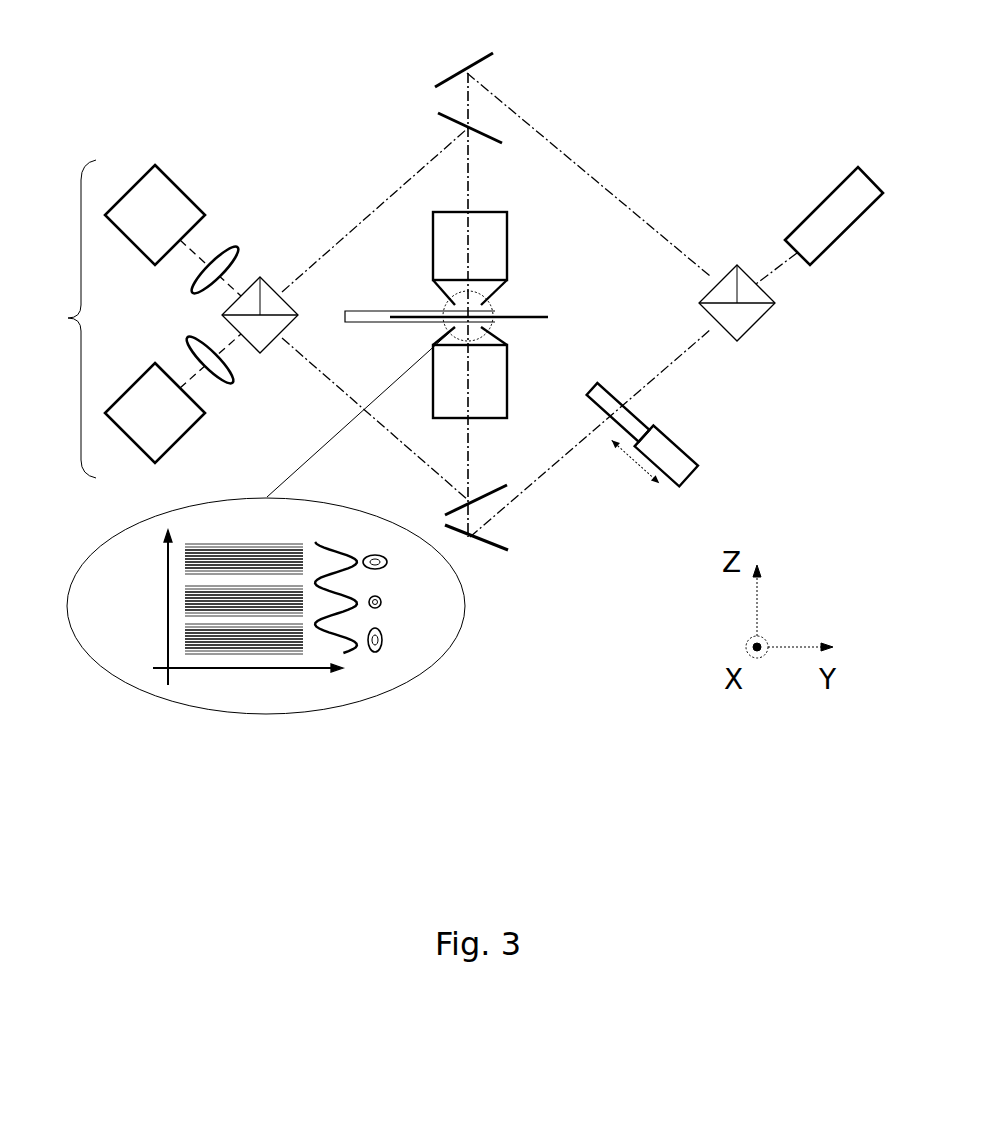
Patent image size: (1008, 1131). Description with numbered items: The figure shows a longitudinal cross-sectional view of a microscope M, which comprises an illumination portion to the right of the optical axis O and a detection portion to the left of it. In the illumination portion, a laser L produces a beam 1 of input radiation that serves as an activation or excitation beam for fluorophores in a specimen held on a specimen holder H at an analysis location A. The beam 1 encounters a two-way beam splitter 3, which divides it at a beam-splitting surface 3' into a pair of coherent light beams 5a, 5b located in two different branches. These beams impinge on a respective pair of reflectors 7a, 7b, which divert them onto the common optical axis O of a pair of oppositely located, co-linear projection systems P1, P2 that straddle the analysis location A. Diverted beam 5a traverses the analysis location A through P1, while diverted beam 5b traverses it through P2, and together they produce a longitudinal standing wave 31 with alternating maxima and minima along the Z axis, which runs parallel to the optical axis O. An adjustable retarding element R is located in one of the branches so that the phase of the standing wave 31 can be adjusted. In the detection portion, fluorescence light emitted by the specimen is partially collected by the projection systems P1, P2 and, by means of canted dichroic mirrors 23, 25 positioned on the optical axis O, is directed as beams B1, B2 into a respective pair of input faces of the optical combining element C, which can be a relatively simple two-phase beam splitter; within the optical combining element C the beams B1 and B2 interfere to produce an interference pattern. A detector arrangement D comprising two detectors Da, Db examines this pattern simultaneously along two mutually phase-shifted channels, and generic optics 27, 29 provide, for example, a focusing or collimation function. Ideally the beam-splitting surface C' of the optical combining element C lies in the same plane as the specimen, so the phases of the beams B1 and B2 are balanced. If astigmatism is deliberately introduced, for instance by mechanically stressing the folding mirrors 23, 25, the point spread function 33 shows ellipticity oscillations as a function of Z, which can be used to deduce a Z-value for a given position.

The microscope M is at (226, 73).
The optical axis O is at (472, 145).
The reflector 7a is at (493, 60).
The reflector 7b is at (510, 548).
The canted dichroic mirror 23 is at (438, 114).
The canted dichroic mirror 25 is at (490, 478).
The coherent light beam 5a is at (612, 195).
The coherent light beam 5b is at (665, 365).
The beam B1 is at (363, 220).
The beam B2 is at (395, 436).
The projection system P1 is at (490, 222).
The projection system P2 is at (490, 352).
The specimen holder H is at (385, 310).
The analysis location A is at (527, 307).
The laser L is at (818, 250).
The beam 1 is at (756, 270).
The two-way beam splitter 3 is at (737, 338).
The beam-splitting surface 3' is at (768, 322).
The adjustable retarding element R is at (660, 445).
The detector arrangement D is at (67, 319).
The detector Da is at (173, 230).
The detector Db is at (173, 398).
The optics 27 is at (230, 255).
The optics 29 is at (213, 365).
The optical combining element C is at (261, 343).
The beam-splitting surface C' is at (273, 267).
The standing wave 31 is at (332, 700).
The point spread function 33 is at (377, 688).